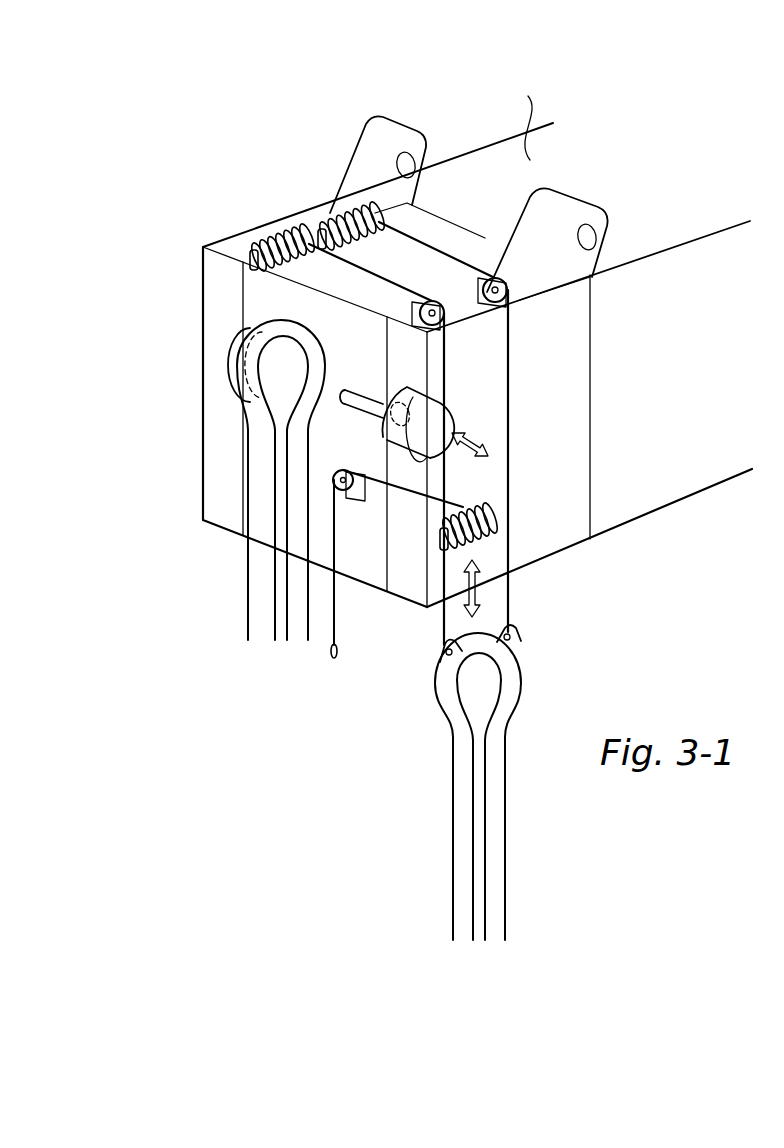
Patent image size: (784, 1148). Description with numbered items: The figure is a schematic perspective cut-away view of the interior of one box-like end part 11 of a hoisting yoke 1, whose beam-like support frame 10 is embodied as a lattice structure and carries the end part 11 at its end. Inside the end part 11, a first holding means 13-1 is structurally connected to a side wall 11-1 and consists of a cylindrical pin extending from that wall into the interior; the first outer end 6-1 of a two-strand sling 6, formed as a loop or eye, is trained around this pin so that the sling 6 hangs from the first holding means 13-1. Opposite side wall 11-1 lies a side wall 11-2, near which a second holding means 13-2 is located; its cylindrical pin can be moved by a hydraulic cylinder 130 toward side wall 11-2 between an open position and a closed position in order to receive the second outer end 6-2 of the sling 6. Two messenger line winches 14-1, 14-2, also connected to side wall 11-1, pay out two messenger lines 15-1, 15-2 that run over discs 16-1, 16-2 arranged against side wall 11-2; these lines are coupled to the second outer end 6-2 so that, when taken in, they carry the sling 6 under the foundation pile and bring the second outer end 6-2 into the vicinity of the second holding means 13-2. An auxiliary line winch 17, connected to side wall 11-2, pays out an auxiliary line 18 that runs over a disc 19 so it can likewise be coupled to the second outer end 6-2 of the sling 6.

The hoisting yoke 1 is at (472, 134).
The support frame 10 is at (531, 100).
The box-like end part 11 is at (222, 226).
The side wall 11-1 is at (225, 297).
The side wall 11-2 is at (575, 432).
The messenger line winch 14-1 is at (275, 230).
The messenger line winch 14-2 is at (345, 212).
The disc 16-1 is at (425, 302).
The disc 16-2 is at (493, 278).
The messenger line 15-1 is at (446, 376).
The messenger line 15-2 is at (512, 352).
The first holding means 13-1 is at (243, 357).
The second holding means 13-2 is at (460, 418).
The hydraulic cylinder 130 is at (362, 393).
The first outer end 6-1 is at (258, 398).
The second outer end 6-2 is at (440, 704).
The sling 6 is at (250, 594).
The auxiliary line winch 17 is at (495, 522).
The auxiliary line 18 is at (336, 612).
The disc 19 is at (350, 493).